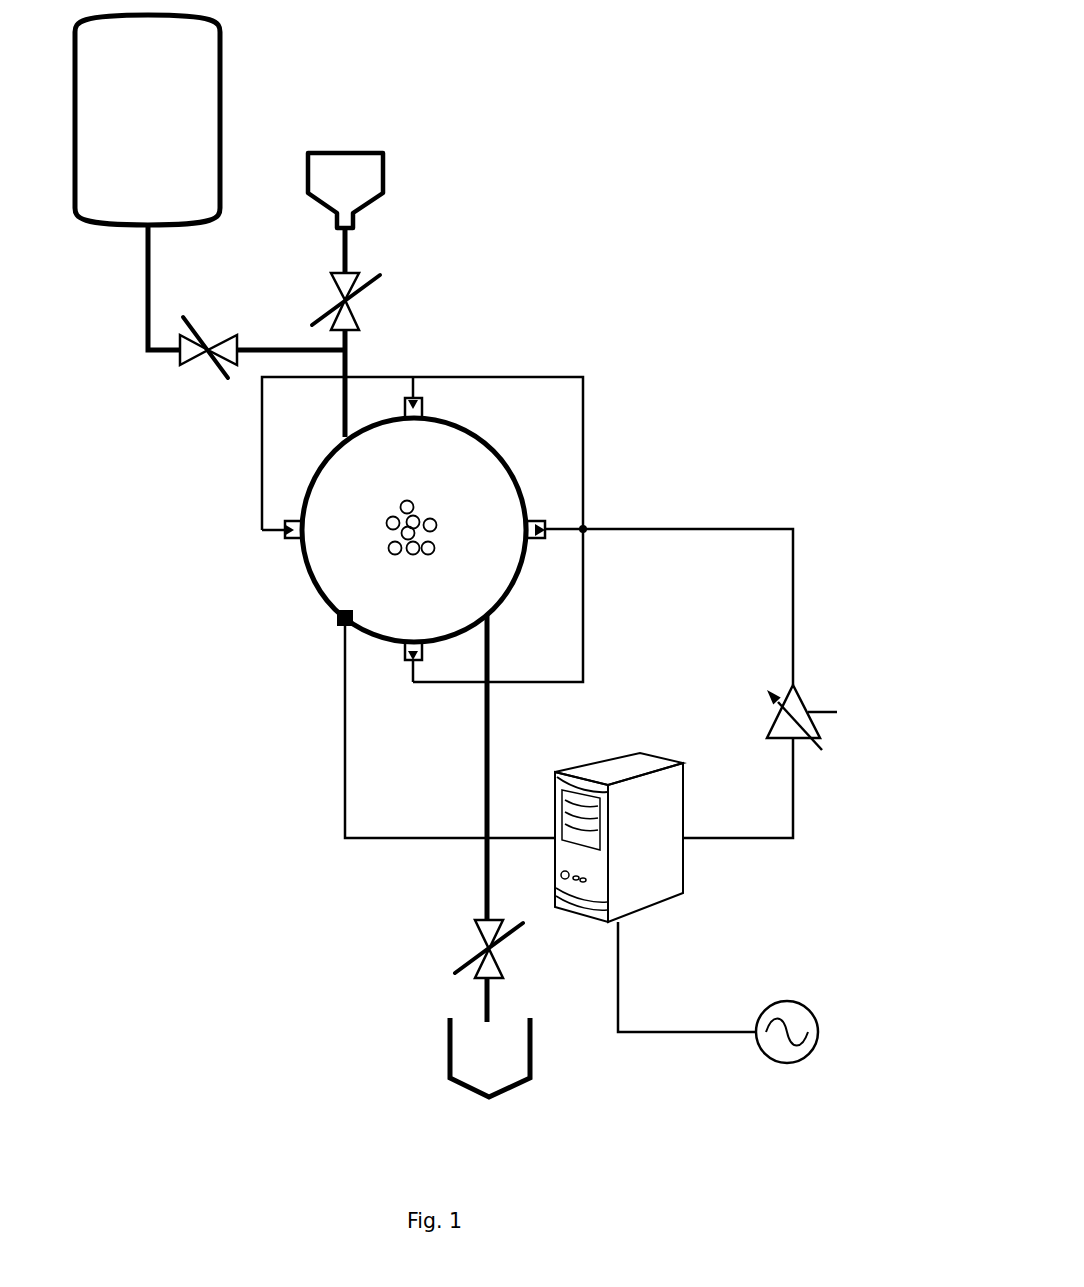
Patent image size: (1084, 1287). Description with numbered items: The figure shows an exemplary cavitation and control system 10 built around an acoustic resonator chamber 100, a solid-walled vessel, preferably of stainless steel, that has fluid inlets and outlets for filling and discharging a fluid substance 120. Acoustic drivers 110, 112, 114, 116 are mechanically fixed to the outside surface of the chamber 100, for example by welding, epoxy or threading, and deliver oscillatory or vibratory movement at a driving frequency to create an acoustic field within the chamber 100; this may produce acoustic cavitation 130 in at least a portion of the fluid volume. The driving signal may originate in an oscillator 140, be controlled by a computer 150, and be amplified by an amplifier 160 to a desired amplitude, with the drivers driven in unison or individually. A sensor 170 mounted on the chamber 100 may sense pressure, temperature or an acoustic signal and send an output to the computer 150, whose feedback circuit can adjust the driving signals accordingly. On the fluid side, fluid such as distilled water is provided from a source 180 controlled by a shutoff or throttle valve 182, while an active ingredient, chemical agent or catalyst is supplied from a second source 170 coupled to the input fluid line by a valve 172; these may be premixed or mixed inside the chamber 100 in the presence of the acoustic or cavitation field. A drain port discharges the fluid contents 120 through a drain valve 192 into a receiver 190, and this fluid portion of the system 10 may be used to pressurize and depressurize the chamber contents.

The cavitation and control system 10 is at (733, 172).
The acoustic resonator chamber 100 is at (495, 448).
The acoustic driver 110 is at (421, 398).
The acoustic driver 112 is at (545, 527).
The acoustic driver 114 is at (413, 660).
The acoustic driver 116 is at (288, 524).
The fluid substance 120 is at (358, 472).
The acoustic cavitation 130 is at (410, 502).
The oscillator 140 is at (818, 1033).
The computer 150 is at (652, 885).
The amplifier 160 is at (823, 737).
The sensor 170 is at (385, 168).
The valve 172 is at (365, 290).
The source 180 is at (222, 113).
The shutoff or throttle valve 182 is at (207, 333).
The receiver 190 is at (532, 1038).
The drain valve 192 is at (487, 947).